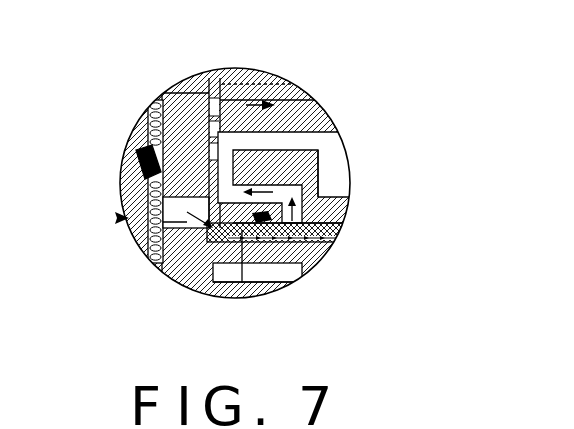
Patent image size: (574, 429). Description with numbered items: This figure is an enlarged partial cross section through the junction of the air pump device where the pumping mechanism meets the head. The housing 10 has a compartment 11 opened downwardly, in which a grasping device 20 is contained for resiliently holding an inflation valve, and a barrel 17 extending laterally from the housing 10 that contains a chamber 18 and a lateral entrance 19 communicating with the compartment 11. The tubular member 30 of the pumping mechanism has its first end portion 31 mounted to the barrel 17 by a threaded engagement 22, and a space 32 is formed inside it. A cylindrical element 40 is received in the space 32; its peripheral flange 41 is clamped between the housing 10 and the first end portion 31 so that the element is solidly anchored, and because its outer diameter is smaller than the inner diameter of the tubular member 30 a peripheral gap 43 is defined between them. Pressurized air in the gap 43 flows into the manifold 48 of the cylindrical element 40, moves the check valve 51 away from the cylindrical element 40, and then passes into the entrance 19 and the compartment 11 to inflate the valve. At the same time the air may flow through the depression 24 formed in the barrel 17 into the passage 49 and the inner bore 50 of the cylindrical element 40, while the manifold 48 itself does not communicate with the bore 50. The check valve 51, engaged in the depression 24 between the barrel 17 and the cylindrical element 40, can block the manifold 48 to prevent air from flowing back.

The housing 10 is at (170, 92).
The compartment 11 is at (130, 146).
The barrel 17 is at (227, 298).
The chamber 18 is at (340, 233).
The entrance 19 is at (177, 273).
The grasping device 20 is at (118, 218).
The threaded engagement 22 is at (238, 72).
The depression 24 is at (199, 96).
The tubular member 30 is at (343, 228).
The first end portion 31 is at (280, 86).
The space 32 is at (317, 110).
The cylindrical element 40 is at (350, 210).
The peripheral flange 41 is at (205, 76).
The peripheral gap 43 is at (302, 93).
The manifold 48 is at (317, 267).
The passage 49 is at (300, 143).
The inner bore 50 is at (338, 180).
The check valve 51 is at (253, 300).